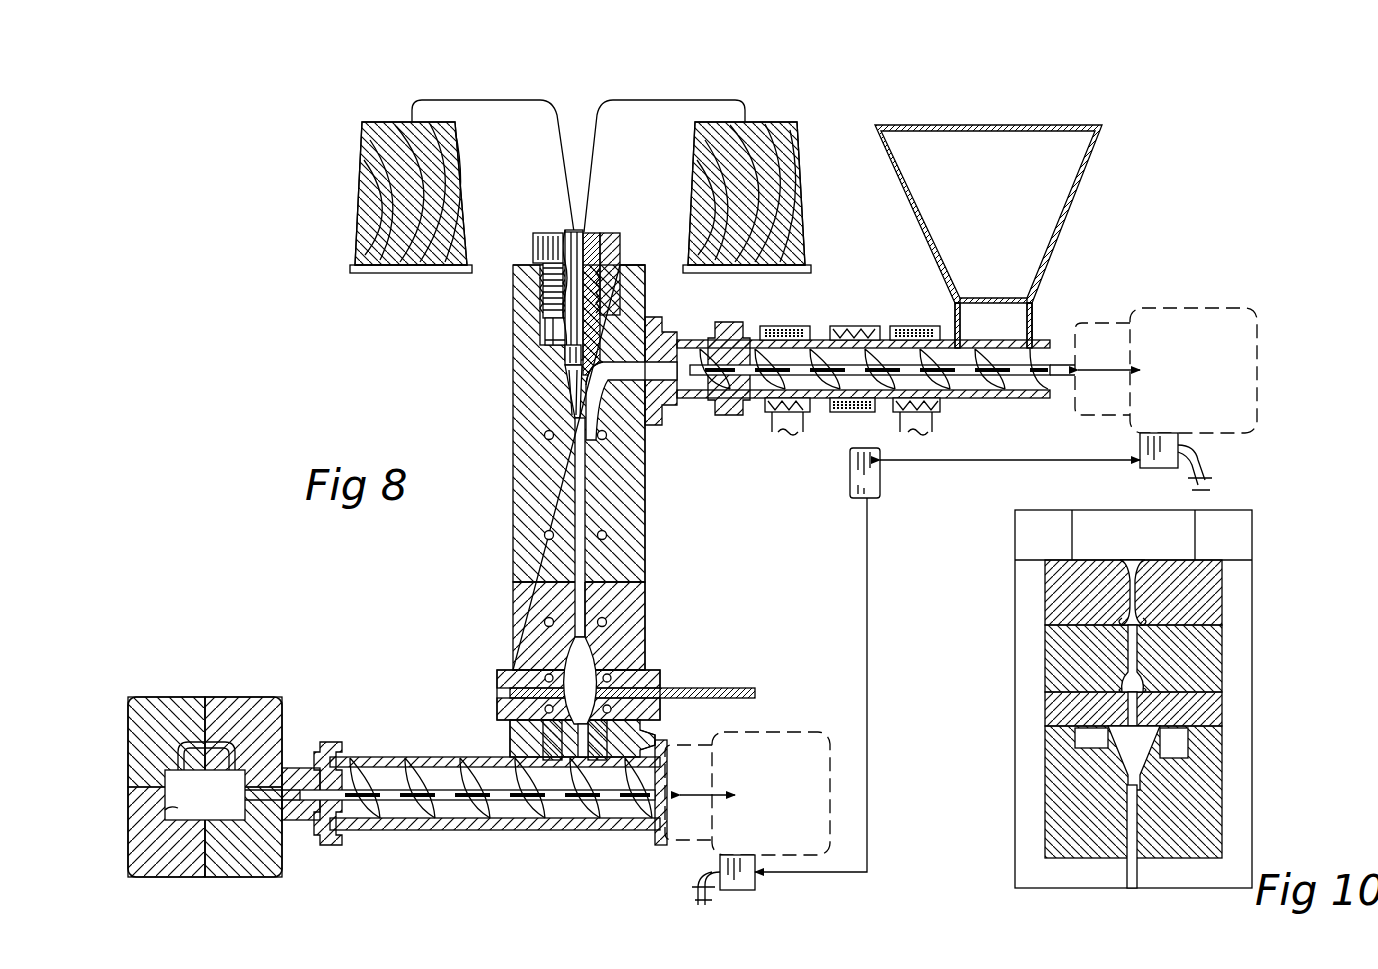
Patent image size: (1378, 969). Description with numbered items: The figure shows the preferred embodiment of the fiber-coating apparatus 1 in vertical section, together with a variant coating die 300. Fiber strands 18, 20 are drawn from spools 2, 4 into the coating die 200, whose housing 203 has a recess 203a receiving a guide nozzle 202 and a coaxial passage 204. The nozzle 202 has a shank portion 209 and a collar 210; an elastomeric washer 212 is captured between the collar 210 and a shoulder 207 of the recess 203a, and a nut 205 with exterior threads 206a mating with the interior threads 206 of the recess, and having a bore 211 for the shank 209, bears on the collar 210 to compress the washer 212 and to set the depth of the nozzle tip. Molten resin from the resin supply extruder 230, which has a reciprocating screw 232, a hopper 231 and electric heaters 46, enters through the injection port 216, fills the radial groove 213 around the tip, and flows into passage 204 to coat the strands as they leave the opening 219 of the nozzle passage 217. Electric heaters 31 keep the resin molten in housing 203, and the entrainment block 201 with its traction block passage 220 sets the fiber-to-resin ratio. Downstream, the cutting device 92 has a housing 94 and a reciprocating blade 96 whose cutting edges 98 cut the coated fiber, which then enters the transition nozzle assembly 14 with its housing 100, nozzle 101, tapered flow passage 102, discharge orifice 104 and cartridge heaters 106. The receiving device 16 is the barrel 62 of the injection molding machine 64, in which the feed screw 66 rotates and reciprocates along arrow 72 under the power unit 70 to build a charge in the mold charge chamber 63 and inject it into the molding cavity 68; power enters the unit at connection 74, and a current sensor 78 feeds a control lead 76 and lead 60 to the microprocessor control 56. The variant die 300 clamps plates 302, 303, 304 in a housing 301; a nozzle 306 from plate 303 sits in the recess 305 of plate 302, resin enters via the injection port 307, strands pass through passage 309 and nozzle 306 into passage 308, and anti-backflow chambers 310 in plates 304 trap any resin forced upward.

In FIG. 8, the extrusion apparatus 1 is at (275, 298).
In FIG. 8, the spool of fiber 2 is at (357, 190).
In FIG. 8, the spool of fiber 4 is at (808, 145).
In FIG. 8, the transition nozzle assembly 14 is at (508, 715).
In FIG. 8, the receiving device 16 is at (483, 783).
In FIG. 8, the fiber strand 18 is at (412, 122).
In FIG. 8, the fiber strand 20 is at (745, 122).
In FIG. 8, the electric heaters 31 is at (545, 436).
In FIG. 8, the electric heaters 46 is at (845, 326).
In FIG. 8, the microprocessor control 56 is at (850, 478).
In FIG. 8, the control line 60 is at (1008, 462).
In FIG. 8, the barrel 62 is at (390, 757).
In FIG. 8, the mold charge chamber 63 is at (720, 345).
In FIG. 8, the injection molding machine 64 is at (178, 697).
In FIG. 8, the feed screw 66 is at (380, 825).
In FIG. 8, the molding cavity 68 is at (178, 812).
In FIG. 8, the power unit 70 is at (680, 845).
In FIG. 8, the arrow 72 is at (702, 795).
In FIG. 8, the connection 74 is at (695, 888).
In FIG. 8, the control lead 76 is at (867, 580).
In FIG. 8, the electrical current sensor 78 is at (755, 880).
In FIG. 8, the cutting device 92 is at (658, 672).
In FIG. 8, the housing 94 is at (660, 700).
In FIG. 8, the cutting blade 96 is at (720, 690).
In FIG. 8, the cutting edges 98 is at (545, 678).
In FIG. 8, the apertured housing 100 is at (510, 728).
In FIG. 8, the nozzle 101 is at (655, 740).
In FIG. 8, the flow passage 102 is at (512, 745).
In FIG. 8, the discharge orifice 104 is at (552, 760).
In FIG. 8, the cartridge heaters 106 is at (597, 760).
In FIG. 8, the coating die 200 is at (415, 390).
In FIG. 8, the entrainment block 201 is at (513, 606).
In FIG. 8, the guide nozzle 202 is at (568, 228).
In FIG. 8, the housing 203 is at (513, 575).
In FIG. 8, the recess 203a is at (543, 318).
In FIG. 8, the passage 204 is at (575, 560).
In FIG. 8, the nut 205 is at (612, 232).
In FIG. 8, the interior threads 206 is at (535, 258).
In FIG. 8, the exterior threads 206a is at (633, 265).
In FIG. 8, the shoulder 207 is at (645, 317).
In FIG. 8, the shank portion 209 is at (565, 230).
In FIG. 8, the collar 210 is at (545, 326).
In FIG. 8, the bore 211 is at (592, 232).
In FIG. 8, the seal or washer 212 is at (567, 355).
In FIG. 8, the radial groove 213 is at (567, 375).
In FIG. 8, the injection port 216 is at (625, 372).
In FIG. 8, the passage 217 is at (596, 420).
In FIG. 8, the opening 219 is at (574, 416).
In FIG. 8, the traction block passage 220 is at (586, 592).
In FIG. 8, the resin supply extruder 230 is at (1095, 265).
In FIG. 8, the hopper 231 is at (1095, 145).
In FIG. 8, the reciprocating screw 232 is at (1062, 340).
In FIG. 10, the coating die 300 is at (1133, 713).
In FIG. 10, the housing 301 is at (1015, 835).
In FIG. 10, the plate 302 is at (1045, 803).
In FIG. 10, the plate 303 is at (1222, 710).
In FIG. 10, the plates 304 is at (1222, 640).
In FIG. 10, the recess 305 is at (1090, 755).
In FIG. 10, the nozzle 306 is at (1185, 755).
In FIG. 10, the resin injection port 307 is at (1075, 745).
In FIG. 10, the passage 308 is at (1130, 880).
In FIG. 10, the passage 309 is at (1125, 560).
In FIG. 10, the anti-backflow chamber 310 is at (1122, 622).